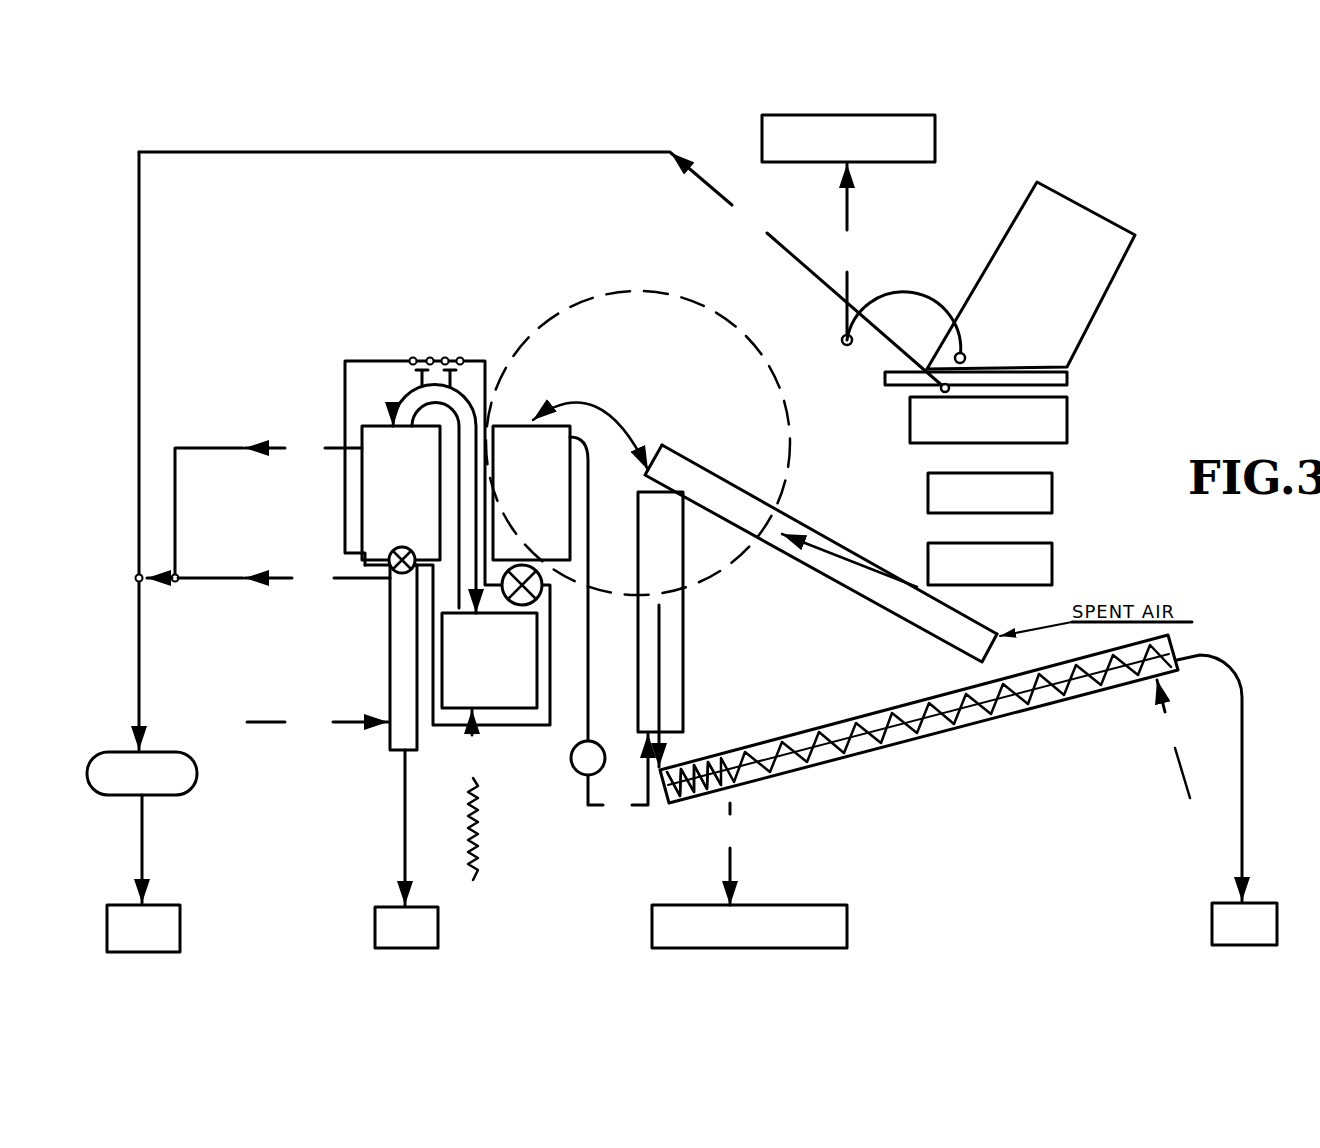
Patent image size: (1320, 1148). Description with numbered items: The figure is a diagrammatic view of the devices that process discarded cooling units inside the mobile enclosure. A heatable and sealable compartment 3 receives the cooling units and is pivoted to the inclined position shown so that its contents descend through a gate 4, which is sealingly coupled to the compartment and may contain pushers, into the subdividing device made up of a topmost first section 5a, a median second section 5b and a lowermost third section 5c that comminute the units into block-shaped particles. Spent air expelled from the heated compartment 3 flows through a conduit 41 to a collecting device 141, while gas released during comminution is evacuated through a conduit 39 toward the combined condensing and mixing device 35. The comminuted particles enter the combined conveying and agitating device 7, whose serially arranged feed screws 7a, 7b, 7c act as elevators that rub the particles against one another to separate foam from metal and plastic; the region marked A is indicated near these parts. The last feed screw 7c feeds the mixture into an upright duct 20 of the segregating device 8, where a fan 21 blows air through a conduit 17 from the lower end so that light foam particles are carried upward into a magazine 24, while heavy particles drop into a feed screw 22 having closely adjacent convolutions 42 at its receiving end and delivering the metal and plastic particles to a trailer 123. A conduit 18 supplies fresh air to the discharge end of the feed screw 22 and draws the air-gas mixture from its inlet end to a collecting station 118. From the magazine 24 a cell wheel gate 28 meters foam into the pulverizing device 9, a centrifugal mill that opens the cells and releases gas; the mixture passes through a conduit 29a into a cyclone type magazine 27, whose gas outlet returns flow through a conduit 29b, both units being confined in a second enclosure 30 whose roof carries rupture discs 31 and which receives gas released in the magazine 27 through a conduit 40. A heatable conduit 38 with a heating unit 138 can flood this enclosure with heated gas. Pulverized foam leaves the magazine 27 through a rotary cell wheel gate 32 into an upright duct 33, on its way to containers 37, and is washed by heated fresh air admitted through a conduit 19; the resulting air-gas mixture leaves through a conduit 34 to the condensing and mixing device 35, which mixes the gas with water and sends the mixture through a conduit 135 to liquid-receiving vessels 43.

The heatable and sealable compartment 3 is at (1108, 270).
The gate 4 is at (1067, 378).
The first section of subdividing device 5a is at (1067, 420).
The second section of subdividing device 5b is at (1052, 493).
The third section of subdividing device 5c is at (1052, 563).
The combined conveying and agitating device 7 is at (821, 553).
The feed screw 7a is at (829, 539).
The feed screw 7b is at (821, 553).
The feed screw 7c is at (849, 560).
The segregating or classifying device 8 is at (674, 625).
The pulverizing device 9 is at (489, 660).
The conduit 17 is at (590, 606).
The conduit 18 is at (950, 792).
The conduit 19 is at (317, 722).
The upright duct 20 is at (683, 672).
The blower or fan 21 is at (572, 772).
The feed screw 22 is at (880, 752).
The magazine 24 is at (540, 583).
The cyclone type magazine 27 is at (401, 493).
The gate 28 is at (529, 566).
The conduit 29a is at (412, 390).
The conduit 29b is at (485, 408).
The second enclosure 30 is at (352, 358).
The bursting or rupture discs 31 is at (445, 356).
The rotary cell wheel gate 32 is at (394, 584).
The upright duct 33 is at (388, 668).
The conduit 34 is at (268, 578).
The combined condensing and mixing device 35 is at (142, 473).
The containers 37 is at (406, 849).
The conduit 38 is at (470, 742).
The conduit 39 is at (542, 270).
The conduit 40 is at (267, 506).
The conduit 41 is at (847, 254).
The closely adjacent convolutions 42 is at (694, 798).
The liquid-receiving vessels 43 is at (143, 928).
The collecting station 118 is at (785, 905).
The trailer 123 is at (1227, 800).
The conduit 135 is at (146, 840).
The heating unit 138 is at (478, 842).
The collecting device 141 is at (935, 138).
The detail region A is at (752, 342).